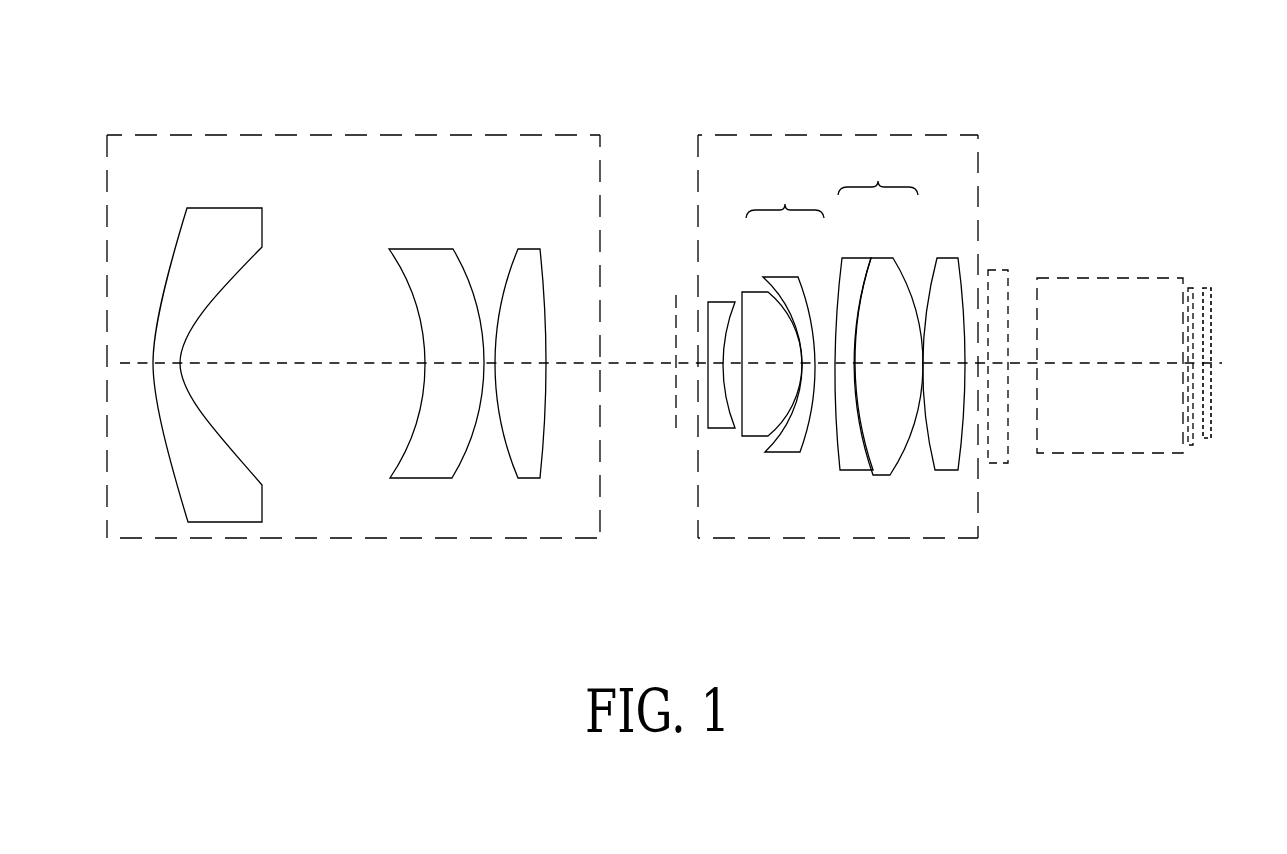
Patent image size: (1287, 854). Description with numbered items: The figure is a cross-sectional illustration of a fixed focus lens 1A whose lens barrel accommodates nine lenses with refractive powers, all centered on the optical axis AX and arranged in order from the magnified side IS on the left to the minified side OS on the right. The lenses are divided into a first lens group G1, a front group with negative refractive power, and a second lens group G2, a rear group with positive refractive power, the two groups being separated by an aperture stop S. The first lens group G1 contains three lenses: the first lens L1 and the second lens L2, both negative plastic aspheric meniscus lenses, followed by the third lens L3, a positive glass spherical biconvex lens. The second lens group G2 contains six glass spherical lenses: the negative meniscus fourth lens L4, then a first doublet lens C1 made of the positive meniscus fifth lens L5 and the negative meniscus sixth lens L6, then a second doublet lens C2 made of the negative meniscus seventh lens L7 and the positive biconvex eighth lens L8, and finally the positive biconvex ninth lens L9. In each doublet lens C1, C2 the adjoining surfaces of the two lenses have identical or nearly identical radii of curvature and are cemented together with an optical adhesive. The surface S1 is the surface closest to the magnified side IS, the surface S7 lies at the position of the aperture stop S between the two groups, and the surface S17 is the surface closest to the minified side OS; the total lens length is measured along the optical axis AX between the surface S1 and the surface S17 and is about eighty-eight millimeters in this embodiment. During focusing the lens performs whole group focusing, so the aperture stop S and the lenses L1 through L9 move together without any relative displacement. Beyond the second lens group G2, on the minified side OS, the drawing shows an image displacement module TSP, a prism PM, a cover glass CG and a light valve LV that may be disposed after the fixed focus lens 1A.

The fixed focus lens 1A is at (240, 54).
The first lens group G1 is at (377, 136).
The second lens group G2 is at (738, 136).
The first lens L1 is at (239, 208).
The second lens L2 is at (412, 249).
The third lens L3 is at (522, 249).
The fourth lens L4 is at (711, 303).
The fifth lens L5 is at (757, 291).
The sixth lens L6 is at (789, 276).
The seventh lens L7 is at (850, 258).
The eighth lens L8 is at (881, 258).
The ninth lens L9 is at (940, 258).
The doublet lens C1 is at (783, 313).
The doublet lens C2 is at (879, 313).
The aperture stop S is at (676, 306).
The surface S1 is at (177, 473).
The surface S7 is at (678, 428).
The surface S17 is at (962, 473).
The optical axis AX is at (352, 364).
The magnified side IS is at (81, 366).
The minified side OS is at (1246, 365).
The image displacement module TSP is at (997, 268).
The prism PM is at (1080, 278).
The cover glass CG is at (1195, 290).
The light valve LV is at (1210, 290).